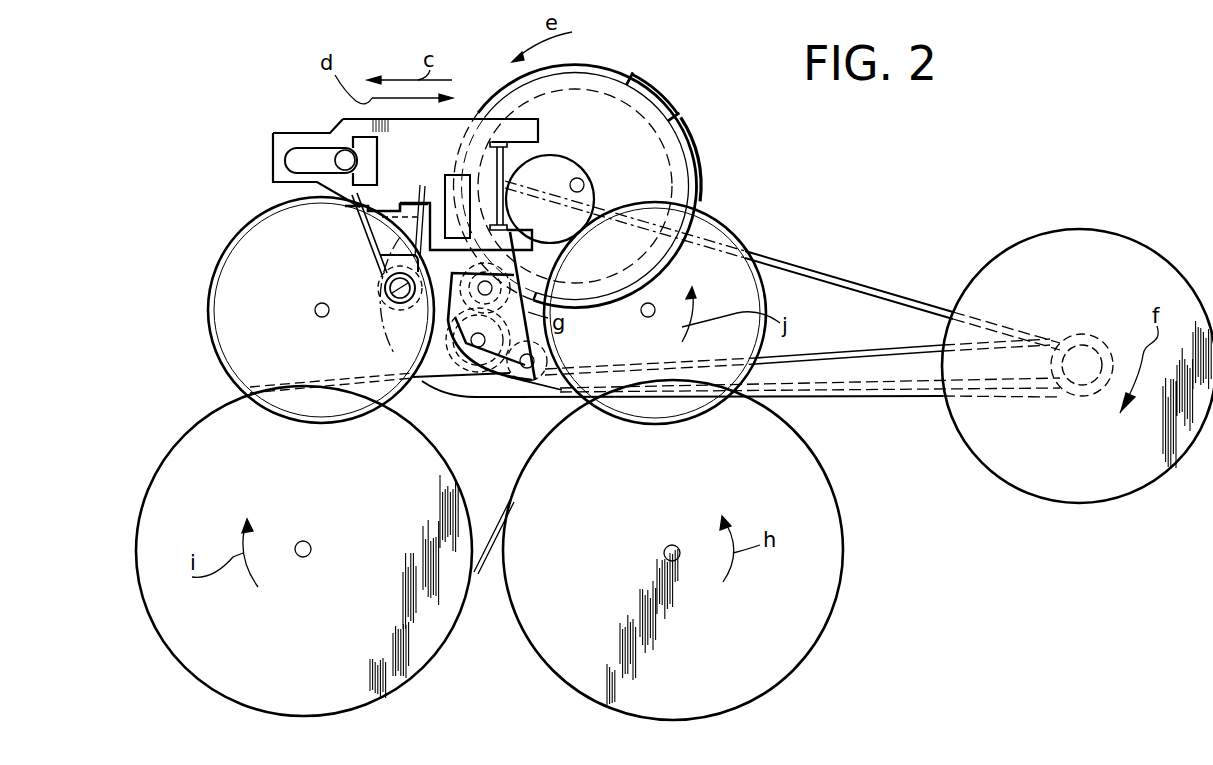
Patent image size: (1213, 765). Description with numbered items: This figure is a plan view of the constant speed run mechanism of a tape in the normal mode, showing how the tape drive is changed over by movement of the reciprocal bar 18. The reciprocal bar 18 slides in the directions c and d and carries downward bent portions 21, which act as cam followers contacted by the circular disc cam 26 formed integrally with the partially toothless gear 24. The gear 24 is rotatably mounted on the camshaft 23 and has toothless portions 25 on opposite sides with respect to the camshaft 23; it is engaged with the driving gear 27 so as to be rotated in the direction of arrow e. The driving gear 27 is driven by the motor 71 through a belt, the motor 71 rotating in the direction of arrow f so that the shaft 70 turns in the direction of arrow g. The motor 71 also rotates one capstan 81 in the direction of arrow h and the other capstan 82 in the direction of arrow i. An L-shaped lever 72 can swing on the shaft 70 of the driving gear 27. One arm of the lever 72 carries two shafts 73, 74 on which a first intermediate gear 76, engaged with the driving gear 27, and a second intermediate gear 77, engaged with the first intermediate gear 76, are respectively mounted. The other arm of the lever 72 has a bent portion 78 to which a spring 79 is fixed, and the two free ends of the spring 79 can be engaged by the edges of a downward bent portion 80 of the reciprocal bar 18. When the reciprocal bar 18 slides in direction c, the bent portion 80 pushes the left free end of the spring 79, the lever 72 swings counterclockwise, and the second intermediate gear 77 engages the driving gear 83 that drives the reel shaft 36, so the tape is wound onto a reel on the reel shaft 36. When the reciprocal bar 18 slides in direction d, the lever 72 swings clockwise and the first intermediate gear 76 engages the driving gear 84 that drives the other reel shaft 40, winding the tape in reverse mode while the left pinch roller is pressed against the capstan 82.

The reciprocal bar 18 is at (297, 131).
The downward bent portions 21 is at (470, 120).
The camshaft 23 is at (581, 179).
The partially toothless gear 24 is at (634, 76).
The toothless portions 25 is at (684, 118).
The circular disc cam 26 is at (551, 160).
The driving gear 27 is at (392, 308).
The reel shaft 36 is at (657, 302).
The reel shaft 40 is at (313, 309).
The shaft 70 is at (440, 333).
The motor 71 is at (1112, 240).
The L-shaped lever 72 is at (448, 308).
The shaft 73 is at (478, 350).
The shaft 74 is at (533, 372).
The first intermediate gear 76 is at (442, 383).
The second intermediate gear 77 is at (508, 398).
The bent portion 78 is at (385, 291).
The spring 79 is at (373, 236).
The downward bent portion 80 is at (367, 225).
The capstan 81 is at (682, 555).
The capstan 82 is at (305, 558).
The driving gear 83 is at (750, 224).
The driving gear 84 is at (207, 303).